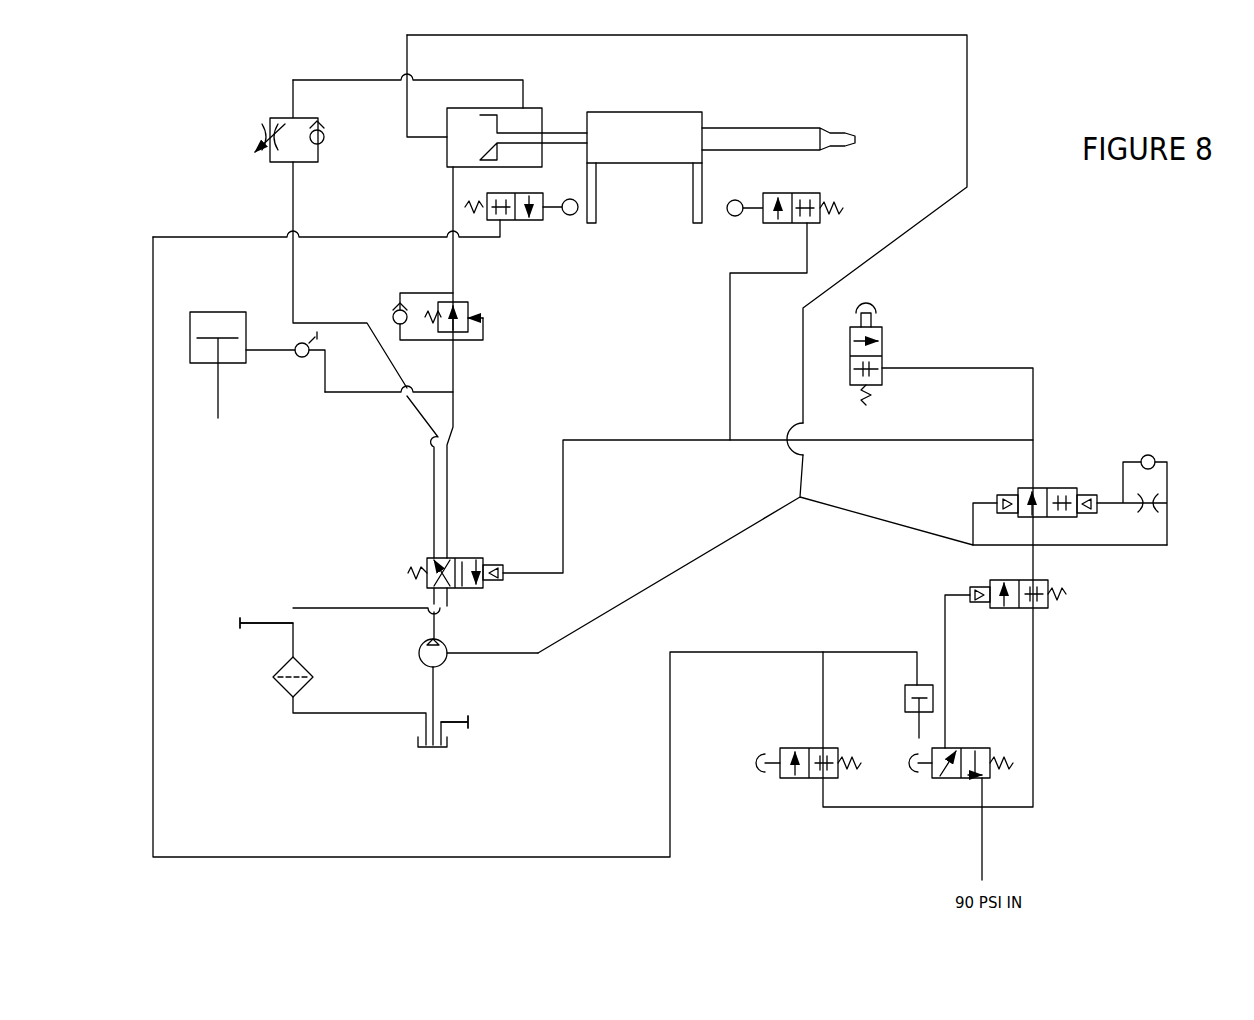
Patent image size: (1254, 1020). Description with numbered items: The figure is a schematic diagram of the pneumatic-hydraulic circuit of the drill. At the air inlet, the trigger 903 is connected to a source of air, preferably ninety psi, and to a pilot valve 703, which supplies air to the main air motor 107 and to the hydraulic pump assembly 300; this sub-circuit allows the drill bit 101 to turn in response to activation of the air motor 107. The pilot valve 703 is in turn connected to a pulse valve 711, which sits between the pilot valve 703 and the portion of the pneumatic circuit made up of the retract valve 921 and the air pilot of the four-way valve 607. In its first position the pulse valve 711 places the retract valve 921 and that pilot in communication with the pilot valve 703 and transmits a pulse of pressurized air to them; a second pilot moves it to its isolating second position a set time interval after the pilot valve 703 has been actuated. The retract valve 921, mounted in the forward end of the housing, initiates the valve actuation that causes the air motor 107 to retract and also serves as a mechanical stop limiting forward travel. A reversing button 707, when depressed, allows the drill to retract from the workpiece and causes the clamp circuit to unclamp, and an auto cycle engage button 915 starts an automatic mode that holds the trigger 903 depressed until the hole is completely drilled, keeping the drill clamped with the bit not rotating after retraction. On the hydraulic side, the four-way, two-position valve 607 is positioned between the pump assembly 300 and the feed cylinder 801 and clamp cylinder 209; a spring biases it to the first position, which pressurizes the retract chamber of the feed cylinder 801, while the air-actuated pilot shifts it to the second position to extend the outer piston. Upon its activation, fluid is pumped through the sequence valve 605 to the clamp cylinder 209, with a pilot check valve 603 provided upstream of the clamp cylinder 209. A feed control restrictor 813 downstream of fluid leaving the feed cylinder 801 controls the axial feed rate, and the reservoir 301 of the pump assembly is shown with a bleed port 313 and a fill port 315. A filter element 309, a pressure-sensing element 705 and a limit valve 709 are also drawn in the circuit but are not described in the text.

The drill bit 101 is at (842, 130).
The air motor 107 is at (625, 110).
The clamp cylinder 209 is at (232, 390).
The hydraulic pump assembly 300 is at (412, 648).
The reservoir 301 is at (437, 760).
The filter 309 is at (273, 693).
The bleed port 313 is at (470, 720).
The fill port 315 is at (232, 607).
The pilot check valve 603 is at (295, 365).
The sequence valve 605 is at (488, 333).
The four-way valve 607 is at (478, 595).
The pilot valve 703 is at (1050, 615).
The pressure switch 705 is at (902, 682).
The reversing button 707 is at (885, 347).
The limit valve 709 is at (520, 223).
The pulse valve 711 is at (1070, 462).
The feed cylinder 801 is at (465, 108).
The feed control restrictor 813 is at (247, 127).
The trigger 903 is at (988, 745).
The auto cycle engage button 915 is at (787, 780).
The retract valve 921 is at (827, 185).